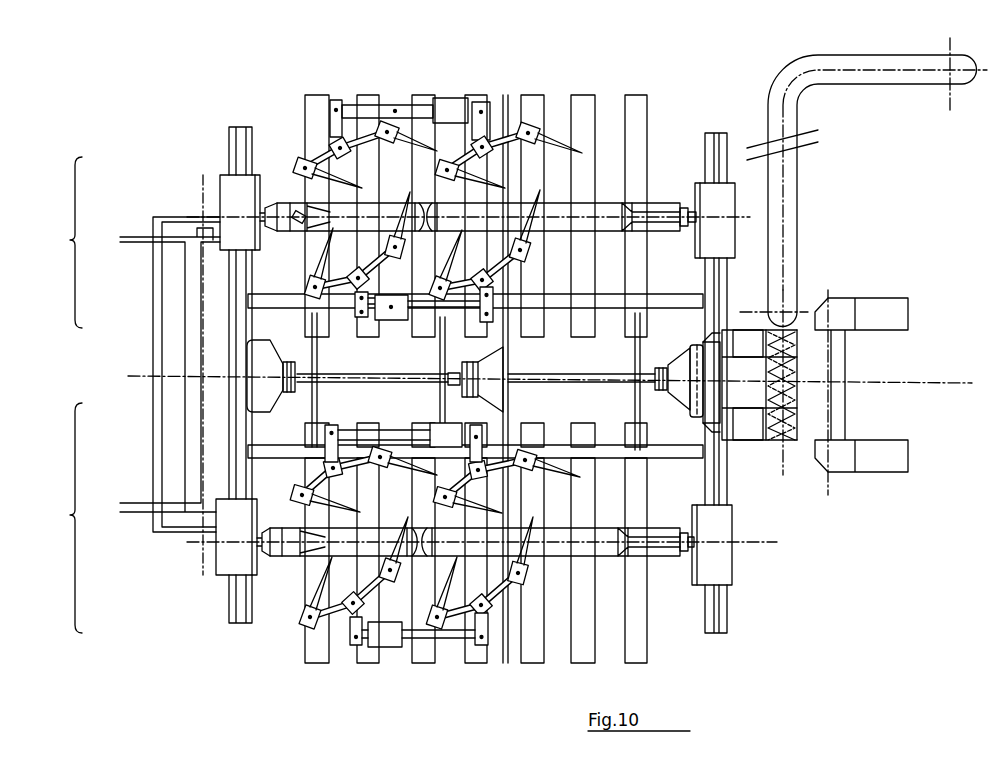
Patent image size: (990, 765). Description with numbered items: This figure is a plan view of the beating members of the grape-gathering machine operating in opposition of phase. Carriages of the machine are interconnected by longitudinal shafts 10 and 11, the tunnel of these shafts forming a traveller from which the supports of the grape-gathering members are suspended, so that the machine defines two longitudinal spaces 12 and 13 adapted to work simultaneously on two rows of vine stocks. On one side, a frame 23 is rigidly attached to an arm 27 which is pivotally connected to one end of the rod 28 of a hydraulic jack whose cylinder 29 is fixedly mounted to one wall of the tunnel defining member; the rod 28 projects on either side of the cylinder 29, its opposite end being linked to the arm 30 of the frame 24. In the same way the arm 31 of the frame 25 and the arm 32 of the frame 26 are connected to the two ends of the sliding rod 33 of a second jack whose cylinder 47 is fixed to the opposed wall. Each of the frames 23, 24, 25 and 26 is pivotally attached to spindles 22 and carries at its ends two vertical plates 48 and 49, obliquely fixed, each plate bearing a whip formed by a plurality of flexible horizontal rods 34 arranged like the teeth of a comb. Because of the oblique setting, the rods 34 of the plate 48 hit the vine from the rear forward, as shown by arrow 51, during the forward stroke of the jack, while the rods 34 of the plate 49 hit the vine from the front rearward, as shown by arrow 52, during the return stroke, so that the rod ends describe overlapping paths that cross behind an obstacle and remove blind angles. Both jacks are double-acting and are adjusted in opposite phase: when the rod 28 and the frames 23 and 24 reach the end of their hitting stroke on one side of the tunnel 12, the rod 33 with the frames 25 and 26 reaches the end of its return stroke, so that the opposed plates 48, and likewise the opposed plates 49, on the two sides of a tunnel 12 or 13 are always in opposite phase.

The longitudinal shaft 10 is at (282, 193).
The longitudinal shaft 11 is at (293, 530).
The longitudinal space 12 is at (60, 242).
The longitudinal space 13 is at (60, 518).
The spindle 22 is at (501, 280).
The frame 23 is at (346, 320).
The frame 24 is at (466, 258).
The frame 25 is at (326, 158).
The frame 26 is at (497, 155).
The arm 27 is at (372, 300).
The rod 28 is at (431, 310).
The cylinder 29 is at (390, 315).
The arm 30 is at (494, 300).
The arm 31 is at (329, 118).
The arm 32 is at (481, 112).
The sliding rod 33 is at (395, 110).
The flexible horizontal rod 34 is at (322, 250).
The cylinder 47 is at (448, 112).
The vertical plate 48 is at (303, 172).
The vertical plate 49 is at (384, 138).
The arrow 51 is at (295, 216).
The arrow 52 is at (440, 214).